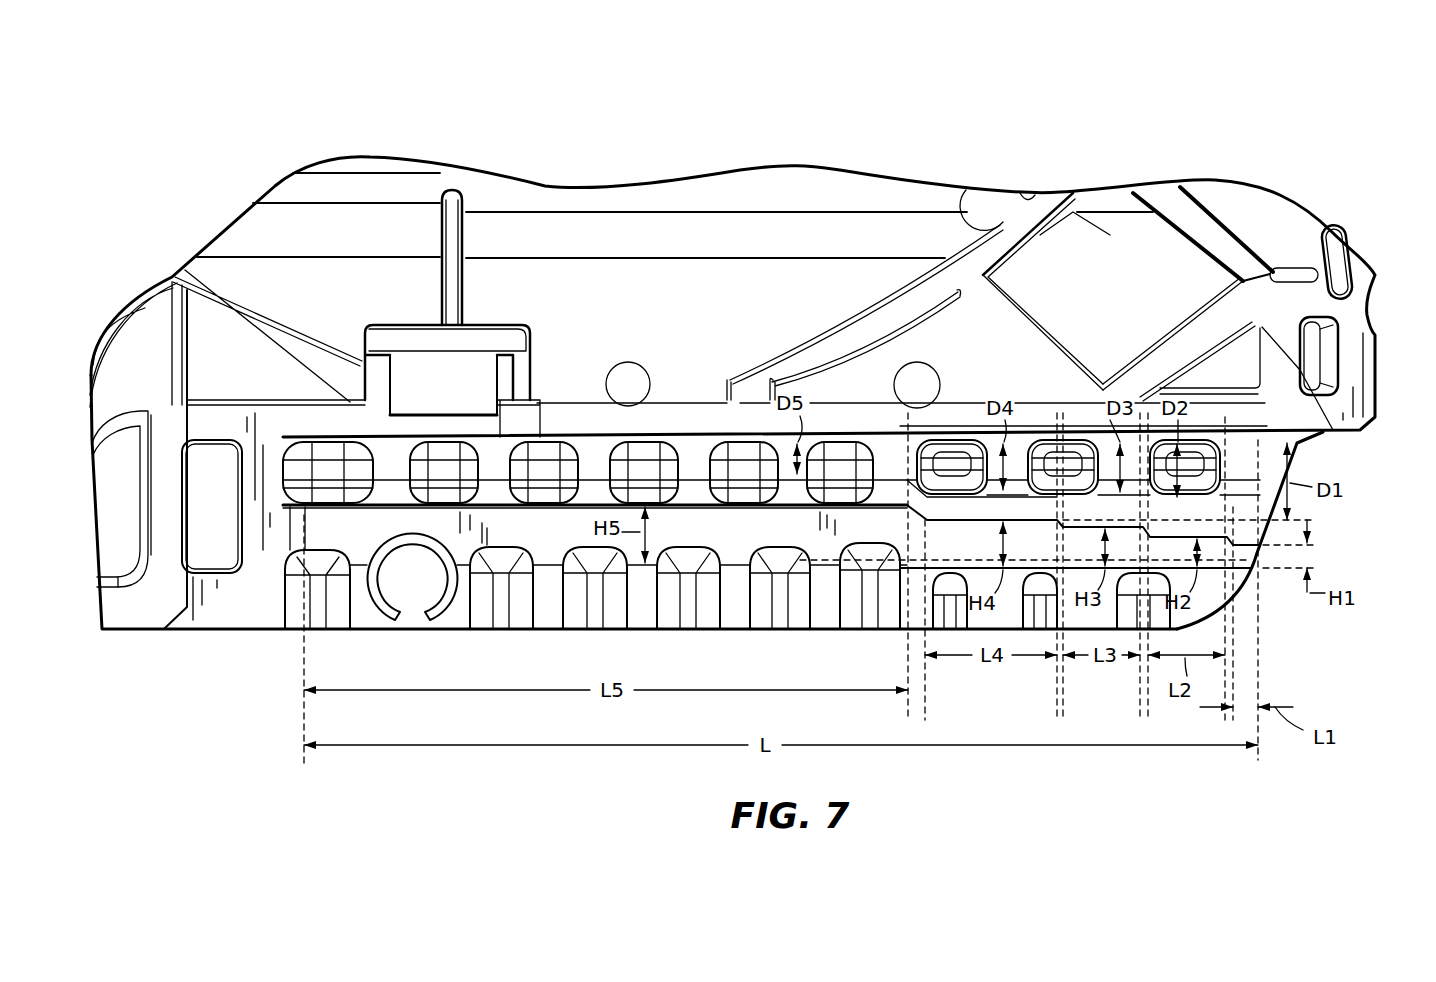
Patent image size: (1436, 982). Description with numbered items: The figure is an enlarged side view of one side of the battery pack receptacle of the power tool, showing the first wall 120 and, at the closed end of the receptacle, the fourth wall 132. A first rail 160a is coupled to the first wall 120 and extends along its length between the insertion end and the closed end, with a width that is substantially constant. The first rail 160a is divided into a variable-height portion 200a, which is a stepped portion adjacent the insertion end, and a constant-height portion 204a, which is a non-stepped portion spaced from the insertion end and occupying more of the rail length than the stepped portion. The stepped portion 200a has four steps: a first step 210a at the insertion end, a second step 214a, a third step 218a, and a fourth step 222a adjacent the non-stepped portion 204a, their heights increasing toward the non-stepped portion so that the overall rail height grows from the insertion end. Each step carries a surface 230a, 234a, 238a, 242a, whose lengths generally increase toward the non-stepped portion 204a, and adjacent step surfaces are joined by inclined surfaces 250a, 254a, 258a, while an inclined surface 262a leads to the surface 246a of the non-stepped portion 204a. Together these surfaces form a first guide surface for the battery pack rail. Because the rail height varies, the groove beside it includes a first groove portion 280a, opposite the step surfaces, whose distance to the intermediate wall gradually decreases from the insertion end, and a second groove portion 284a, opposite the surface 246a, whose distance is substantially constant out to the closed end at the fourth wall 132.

The first wall 120 is at (387, 460).
The fourth wall 132 is at (285, 478).
The surface of the non-stepped portion 246a is at (485, 450).
The second groove portion 284a is at (697, 462).
The inclined surface 262a is at (900, 478).
The fourth step 222a is at (945, 497).
The surface of the fourth step 242a is at (868, 251).
The third step 218a is at (1097, 430).
The surface of the third step 238a is at (1045, 257).
The second step 214a is at (1192, 440).
The surface of the second step 234a is at (1173, 256).
The inclined surface 250a is at (1223, 445).
The first step 210a is at (1240, 445).
The surface of the first step 230a is at (1302, 279).
The inclined surface 258a is at (1075, 400).
The inclined surface 254a is at (1157, 455).
The first groove portion 280a is at (1330, 464).
The variable-height portion 200a is at (953, 557).
The first rail 160a is at (302, 538).
The constant-height portion 204a is at (548, 543).